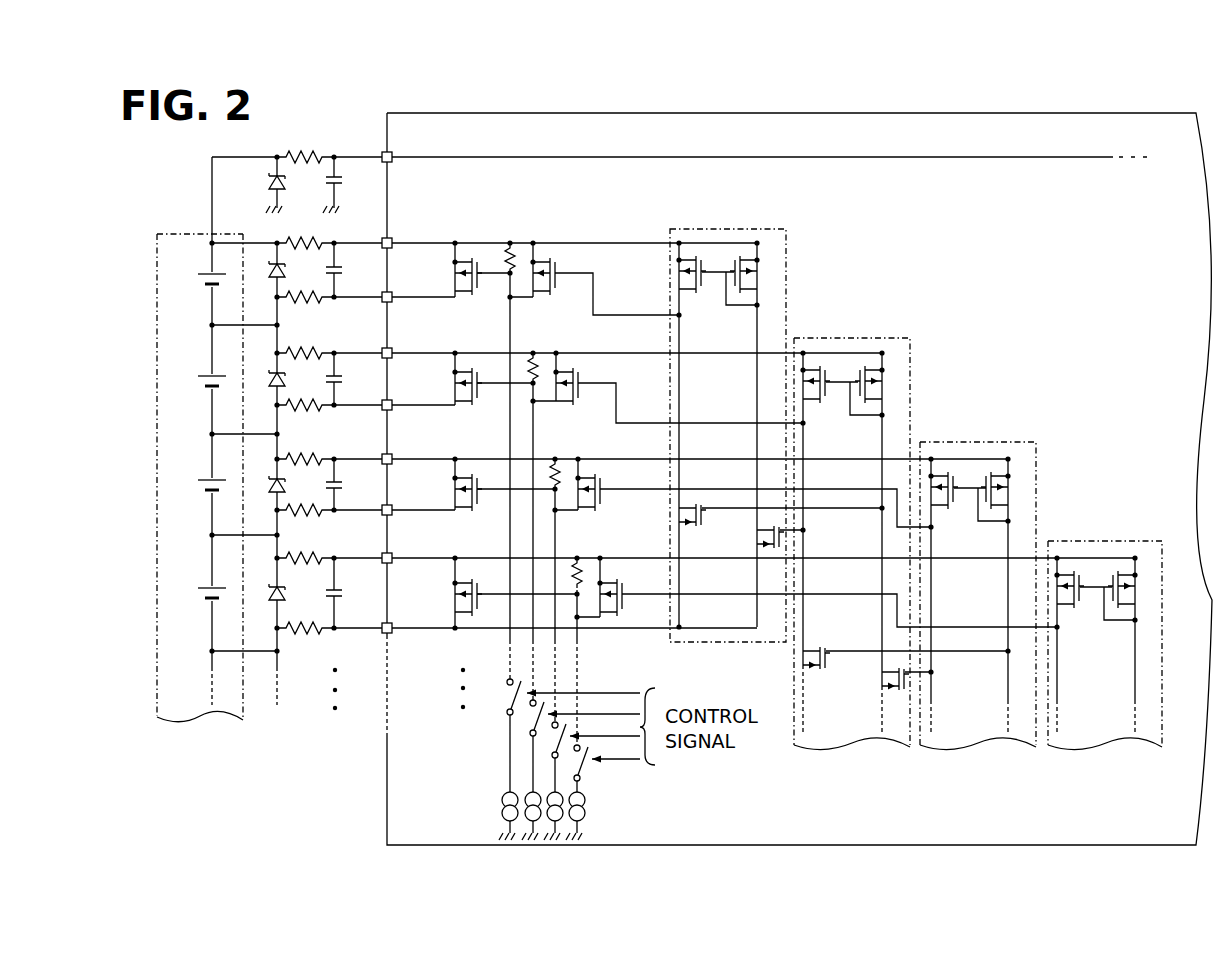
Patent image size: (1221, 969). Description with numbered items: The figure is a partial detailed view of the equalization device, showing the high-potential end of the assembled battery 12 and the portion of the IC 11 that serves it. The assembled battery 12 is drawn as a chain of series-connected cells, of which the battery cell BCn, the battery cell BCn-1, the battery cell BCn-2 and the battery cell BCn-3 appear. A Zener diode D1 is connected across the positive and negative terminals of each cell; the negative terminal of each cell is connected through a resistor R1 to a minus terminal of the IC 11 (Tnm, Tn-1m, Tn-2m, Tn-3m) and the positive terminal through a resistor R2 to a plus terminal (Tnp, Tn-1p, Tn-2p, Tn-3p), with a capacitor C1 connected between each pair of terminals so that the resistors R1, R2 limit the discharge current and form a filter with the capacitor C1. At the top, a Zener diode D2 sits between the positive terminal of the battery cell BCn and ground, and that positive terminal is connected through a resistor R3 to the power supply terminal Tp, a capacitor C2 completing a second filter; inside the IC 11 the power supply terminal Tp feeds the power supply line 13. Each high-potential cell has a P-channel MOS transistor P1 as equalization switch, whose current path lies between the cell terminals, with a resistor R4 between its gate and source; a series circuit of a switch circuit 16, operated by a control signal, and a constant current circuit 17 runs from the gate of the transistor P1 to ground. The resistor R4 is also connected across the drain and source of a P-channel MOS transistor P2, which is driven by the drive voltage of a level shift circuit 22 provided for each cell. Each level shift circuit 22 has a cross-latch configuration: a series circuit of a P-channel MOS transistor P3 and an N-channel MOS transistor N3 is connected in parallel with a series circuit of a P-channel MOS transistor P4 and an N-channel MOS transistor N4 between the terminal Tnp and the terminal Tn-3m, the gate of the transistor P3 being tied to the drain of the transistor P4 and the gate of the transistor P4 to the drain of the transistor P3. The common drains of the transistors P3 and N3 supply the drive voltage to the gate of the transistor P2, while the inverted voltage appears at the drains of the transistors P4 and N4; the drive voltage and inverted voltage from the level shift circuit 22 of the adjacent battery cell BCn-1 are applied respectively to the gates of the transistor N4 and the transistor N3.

The IC 11 is at (659, 113).
The assembled battery 12 is at (180, 233).
The power supply line 13 is at (580, 156).
The level shift circuit 22 is at (723, 228).
The switch circuit 16 is at (505, 702).
The constant current circuit 17 is at (500, 811).
The resistor R1 is at (305, 291).
The resistor R2 is at (306, 238).
The resistor R3 is at (300, 155).
The resistor R4 is at (507, 257).
The capacitor C1 is at (343, 270).
The capacitor C2 is at (343, 181).
The Zener diode D1 is at (271, 280).
The Zener diode D2 is at (268, 184).
The P-channel MOS transistor P1 is at (453, 281).
The P-channel MOS transistor P2 is at (548, 291).
The P-channel MOS transistor P3 is at (883, 442).
The P-channel MOS transistor P4 is at (728, 271).
The N-channel MOS transistor N3 is at (820, 683).
The N-channel MOS transistor N4 is at (756, 525).
The power supply terminal Tp is at (385, 152).
The terminal Tnp is at (383, 239).
The terminal Tnm is at (384, 303).
The terminal Tn-1p is at (383, 350).
The terminal Tn-1m is at (383, 409).
The terminal Tn-2p is at (383, 456).
The terminal Tn-2m is at (383, 514).
The terminal Tn-3p is at (383, 555).
The terminal Tn-3m is at (383, 636).
The battery cell BCn is at (193, 269).
The battery cell BCn-1 is at (191, 372).
The battery cell BCn-2 is at (191, 477).
The battery cell BCn-3 is at (191, 586).